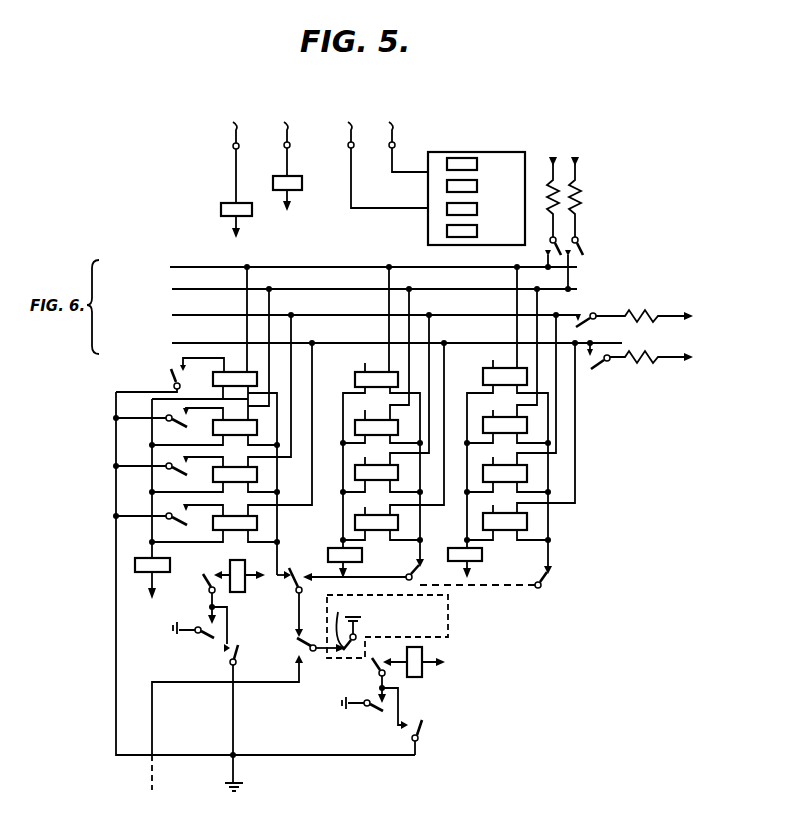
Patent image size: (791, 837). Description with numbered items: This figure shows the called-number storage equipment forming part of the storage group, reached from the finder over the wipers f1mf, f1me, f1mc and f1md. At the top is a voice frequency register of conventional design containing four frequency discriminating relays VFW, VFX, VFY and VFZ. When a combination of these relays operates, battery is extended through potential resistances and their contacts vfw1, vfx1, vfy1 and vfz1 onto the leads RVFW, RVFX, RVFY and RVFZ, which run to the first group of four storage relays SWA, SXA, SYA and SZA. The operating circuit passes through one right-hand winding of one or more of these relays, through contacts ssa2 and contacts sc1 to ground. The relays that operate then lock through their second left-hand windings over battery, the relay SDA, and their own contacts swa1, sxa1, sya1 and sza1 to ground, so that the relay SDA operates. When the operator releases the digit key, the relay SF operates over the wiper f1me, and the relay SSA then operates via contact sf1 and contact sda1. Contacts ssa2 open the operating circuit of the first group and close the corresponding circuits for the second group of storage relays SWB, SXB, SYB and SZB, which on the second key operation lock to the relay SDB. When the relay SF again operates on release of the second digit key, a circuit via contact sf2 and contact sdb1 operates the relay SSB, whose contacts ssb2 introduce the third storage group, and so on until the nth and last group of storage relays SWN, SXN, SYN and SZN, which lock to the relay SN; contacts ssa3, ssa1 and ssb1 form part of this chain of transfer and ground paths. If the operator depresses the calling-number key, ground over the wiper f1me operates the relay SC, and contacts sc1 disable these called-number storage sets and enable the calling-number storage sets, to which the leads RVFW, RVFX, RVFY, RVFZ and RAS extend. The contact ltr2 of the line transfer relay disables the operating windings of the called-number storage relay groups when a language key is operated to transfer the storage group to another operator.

The wiper f1mf is at (237, 154).
The wiper f1me is at (292, 140).
The wiper f1mc is at (381, 156).
The wiper f1md is at (401, 138).
The relay SC is at (222, 220).
The relay SF is at (274, 193).
The frequency discriminating relay VFW is at (481, 164).
The frequency discriminating relay VFX is at (479, 186).
The frequency discriminating relay VFY is at (479, 209).
The frequency discriminating relay VFZ is at (478, 231).
The contact vfw1 is at (529, 213).
The contact vfx1 is at (592, 224).
The contact vfy1 is at (634, 323).
The contact vfz1 is at (640, 361).
The lead RVFW is at (341, 268).
The lead RVFX is at (341, 291).
The lead RVFY is at (342, 316).
The lead RVFZ is at (364, 344).
The contact swa1 is at (170, 375).
The storage relay SWA is at (214, 421).
The contact sxa1 is at (168, 424).
The storage relay SXA is at (214, 434).
The contact sya1 is at (168, 473).
The storage relay SYA is at (220, 405).
The contact sza1 is at (168, 522).
The storage relay SZA is at (230, 444).
The storage relay SWB is at (381, 415).
The storage relay SXB is at (381, 367).
The storage relay SYB is at (384, 405).
The storage relay SZB is at (392, 443).
The storage relay SWN is at (507, 418).
The storage relay SXN is at (507, 367).
The storage relay SYN is at (510, 405).
The storage relay SZN is at (519, 443).
The relay SDA is at (144, 499).
The relay SDB is at (345, 563).
The relay SN is at (465, 563).
The relay SSA is at (239, 566).
The contact sf1 is at (210, 605).
The contacts ssa2 is at (300, 574).
The contacts ssb2 is at (382, 572).
The contact ssa3 is at (500, 582).
The contact sda1 is at (193, 638).
The contact ssa1 is at (248, 718).
The contacts sc1 is at (248, 674).
The contact ltr2 is at (387, 626).
The contact sf2 is at (388, 686).
The relay SSB is at (419, 659).
The contact sdb1 is at (366, 713).
The contact ssb1 is at (436, 737).
The lead RAS is at (156, 788).